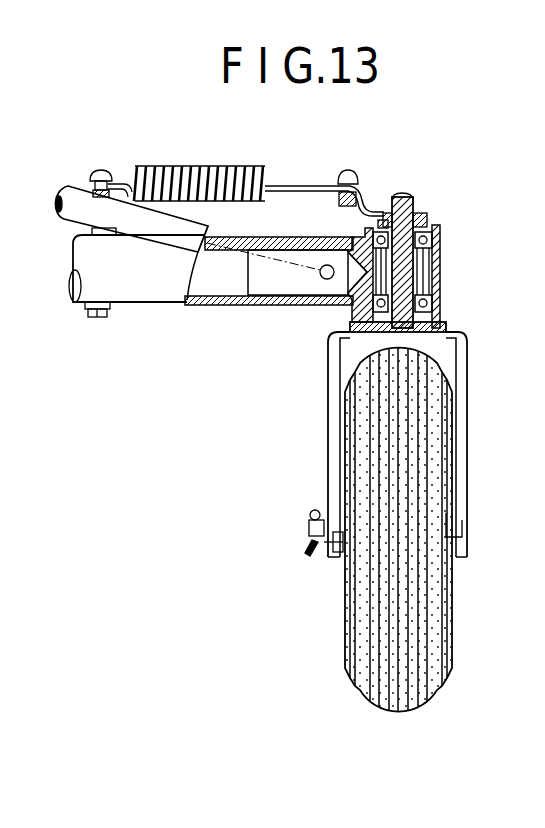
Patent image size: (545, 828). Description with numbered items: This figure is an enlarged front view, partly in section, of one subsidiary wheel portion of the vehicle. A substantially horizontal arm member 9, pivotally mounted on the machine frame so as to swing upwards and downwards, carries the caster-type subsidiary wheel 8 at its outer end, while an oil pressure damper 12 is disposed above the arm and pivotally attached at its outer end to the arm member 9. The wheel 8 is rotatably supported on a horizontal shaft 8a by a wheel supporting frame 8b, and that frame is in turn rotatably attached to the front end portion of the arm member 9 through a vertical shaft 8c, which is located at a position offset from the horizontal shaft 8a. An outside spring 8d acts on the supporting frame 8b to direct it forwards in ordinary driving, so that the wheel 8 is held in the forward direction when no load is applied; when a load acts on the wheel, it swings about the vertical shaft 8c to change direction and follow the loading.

The subsidiary wheel 8 is at (418, 668).
The horizontal shaft 8a is at (460, 518).
The wheel supporting frame 8b is at (463, 438).
The vertical shaft 8c is at (408, 276).
The outside spring 8d is at (254, 170).
The arm member 9 is at (160, 284).
The oil pressure damper 12 is at (146, 212).